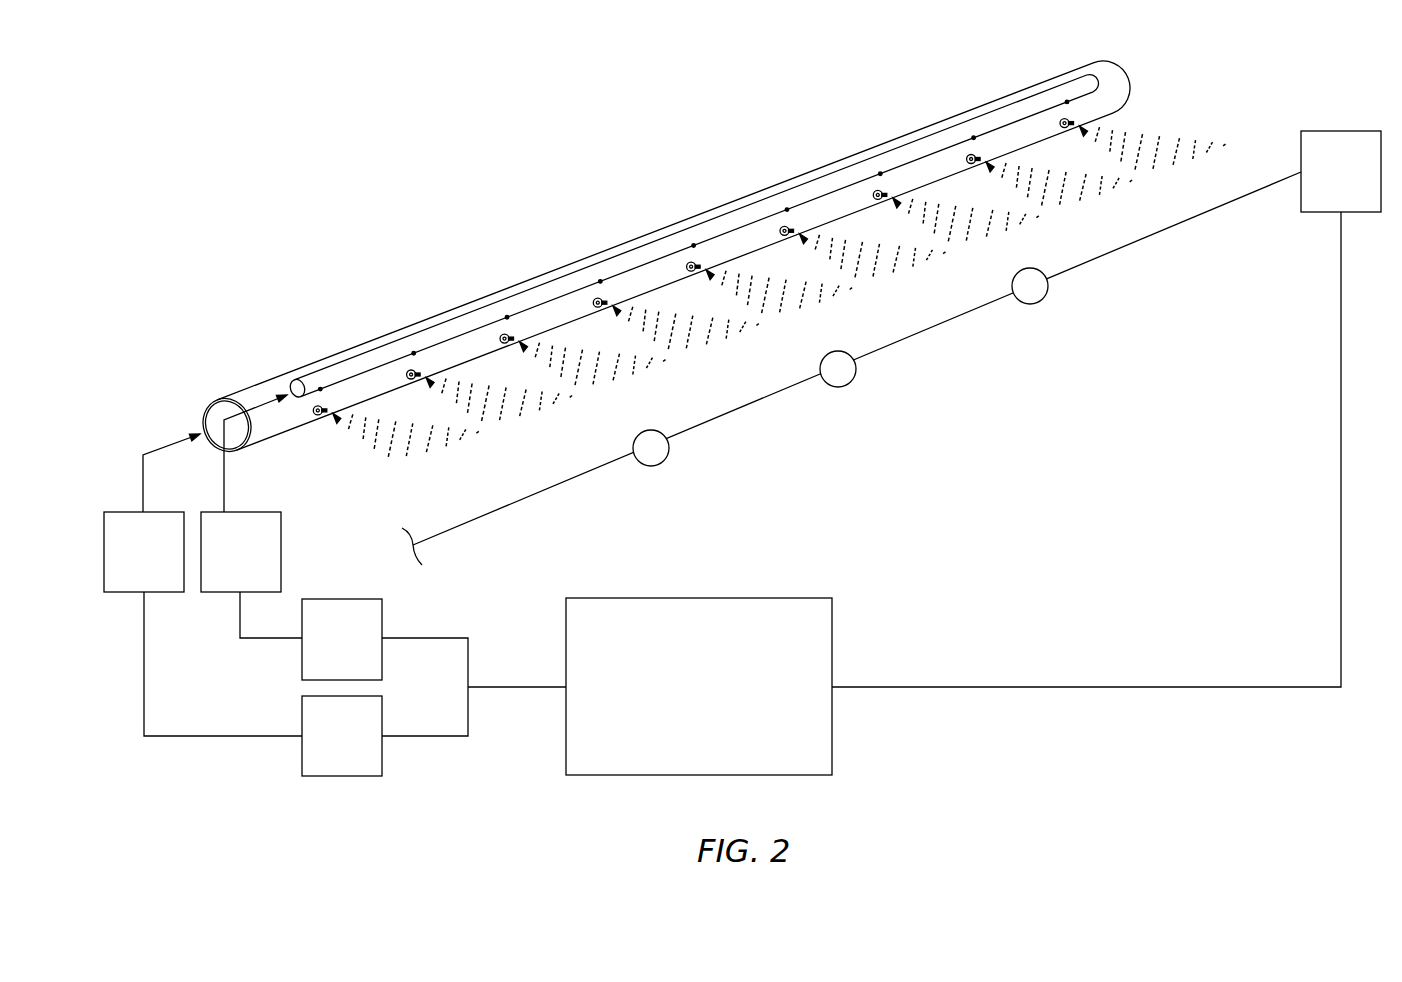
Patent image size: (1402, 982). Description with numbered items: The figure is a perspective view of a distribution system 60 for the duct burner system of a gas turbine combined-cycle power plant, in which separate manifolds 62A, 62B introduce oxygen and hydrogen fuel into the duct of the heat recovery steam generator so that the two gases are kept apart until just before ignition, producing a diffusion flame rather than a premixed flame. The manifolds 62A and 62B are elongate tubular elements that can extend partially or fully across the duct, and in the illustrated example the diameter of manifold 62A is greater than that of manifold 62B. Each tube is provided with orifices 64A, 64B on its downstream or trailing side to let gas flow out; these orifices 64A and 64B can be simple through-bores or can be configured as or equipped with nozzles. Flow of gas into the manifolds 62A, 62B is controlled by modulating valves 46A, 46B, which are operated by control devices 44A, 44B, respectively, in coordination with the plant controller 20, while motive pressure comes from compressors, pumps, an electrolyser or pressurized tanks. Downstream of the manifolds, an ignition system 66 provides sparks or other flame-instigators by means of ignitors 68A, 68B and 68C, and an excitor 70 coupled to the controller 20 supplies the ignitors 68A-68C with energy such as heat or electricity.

The plant controller 20 is at (833, 642).
The control device 44A is at (300, 753).
The control device 44B is at (385, 618).
The valve 46A is at (163, 595).
The valve 46B is at (283, 552).
The distribution system 60 is at (221, 94).
The manifold 62A is at (370, 352).
The manifold 62B is at (315, 375).
The orifices 64A is at (408, 370).
The orifices 64B is at (600, 279).
The ignition system 66 is at (1241, 164).
The ignitor 68A is at (667, 455).
The ignitor 68B is at (854, 375).
The ignitor 68C is at (1046, 292).
The excitor 70 is at (1341, 131).